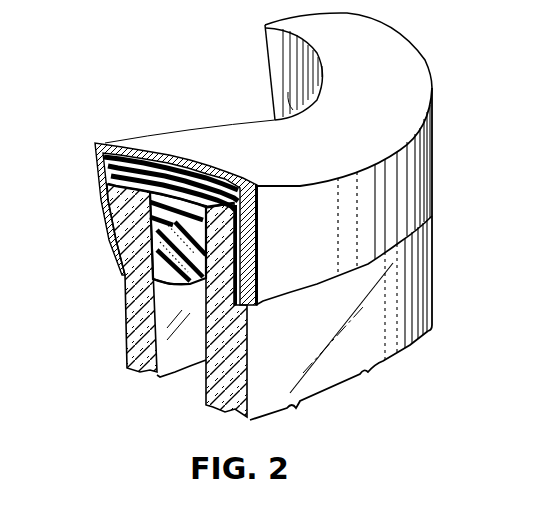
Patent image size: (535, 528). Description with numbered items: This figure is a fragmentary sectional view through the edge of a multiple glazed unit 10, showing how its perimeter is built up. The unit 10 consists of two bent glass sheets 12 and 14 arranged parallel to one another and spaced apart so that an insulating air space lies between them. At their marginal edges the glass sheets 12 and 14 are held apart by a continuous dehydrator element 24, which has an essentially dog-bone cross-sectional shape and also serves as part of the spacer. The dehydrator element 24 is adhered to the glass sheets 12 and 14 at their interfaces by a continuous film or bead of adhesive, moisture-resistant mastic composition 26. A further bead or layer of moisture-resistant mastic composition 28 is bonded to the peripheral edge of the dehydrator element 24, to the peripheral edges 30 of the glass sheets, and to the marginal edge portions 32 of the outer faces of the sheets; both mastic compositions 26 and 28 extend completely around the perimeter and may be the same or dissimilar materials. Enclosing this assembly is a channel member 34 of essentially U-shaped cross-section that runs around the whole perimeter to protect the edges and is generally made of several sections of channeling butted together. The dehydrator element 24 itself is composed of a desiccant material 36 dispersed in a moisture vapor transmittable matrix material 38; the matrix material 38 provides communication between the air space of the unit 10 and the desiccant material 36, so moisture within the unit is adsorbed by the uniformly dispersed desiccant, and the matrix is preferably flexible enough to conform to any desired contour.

The multiple glazed unit 10 is at (207, 58).
The glass sheet 12 is at (126, 356).
The glass sheet 14 is at (248, 357).
The dehydrator element 24 is at (197, 292).
The mastic composition 26 is at (152, 237).
The mastic composition 28 is at (112, 164).
The peripheral edges 30 is at (114, 177).
The marginal edge portions 32 is at (117, 207).
The channel member 34 is at (176, 141).
The desiccant material 36 is at (165, 276).
The matrix material 38 is at (157, 290).